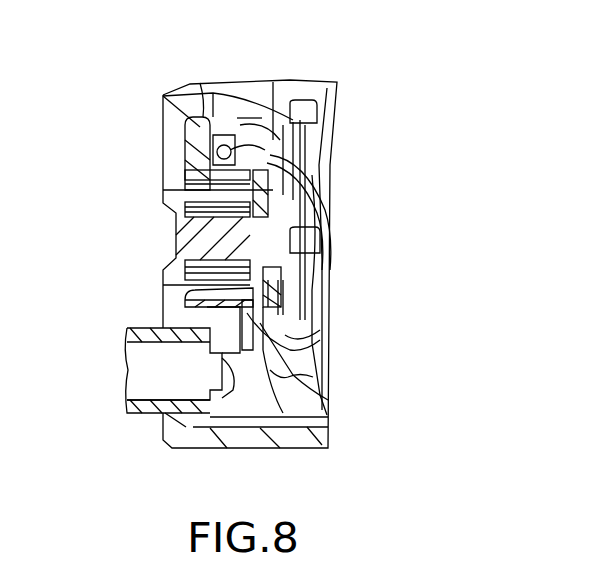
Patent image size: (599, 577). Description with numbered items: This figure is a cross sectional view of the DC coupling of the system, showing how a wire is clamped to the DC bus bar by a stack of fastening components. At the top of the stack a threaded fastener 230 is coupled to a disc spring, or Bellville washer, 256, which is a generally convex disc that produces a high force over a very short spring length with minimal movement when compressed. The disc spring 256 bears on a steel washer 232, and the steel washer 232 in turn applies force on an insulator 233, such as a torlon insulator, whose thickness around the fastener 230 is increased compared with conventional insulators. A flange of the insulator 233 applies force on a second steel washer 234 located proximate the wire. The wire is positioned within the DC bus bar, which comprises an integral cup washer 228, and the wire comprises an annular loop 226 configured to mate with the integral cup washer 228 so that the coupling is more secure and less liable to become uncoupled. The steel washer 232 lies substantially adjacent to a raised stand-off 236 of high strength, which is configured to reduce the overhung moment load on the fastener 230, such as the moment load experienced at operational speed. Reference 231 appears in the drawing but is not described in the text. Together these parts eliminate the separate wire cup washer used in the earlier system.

The annular loop 226 is at (180, 307).
The integral cup washer 228 is at (223, 140).
The fastener 230 is at (333, 213).
The curved band 231 is at (330, 163).
The steel washer 232 is at (318, 300).
The insulator 233 is at (313, 337).
The steel washer 234 is at (263, 136).
The raised stand-off 236 is at (165, 194).
The disc spring/Bellville washer 256 is at (323, 290).